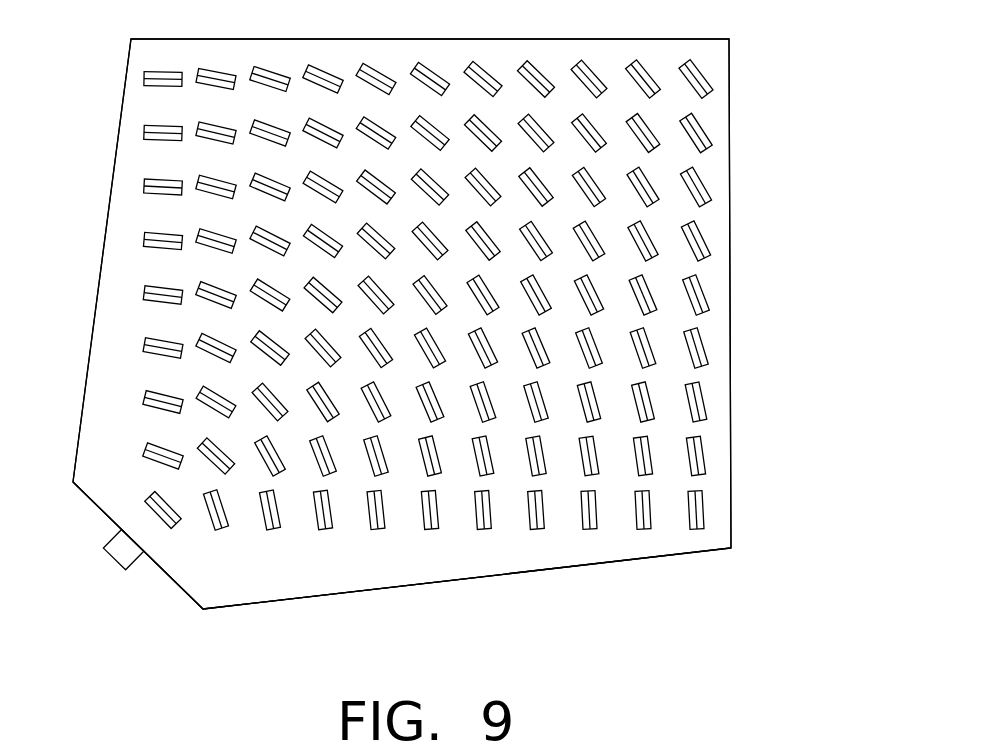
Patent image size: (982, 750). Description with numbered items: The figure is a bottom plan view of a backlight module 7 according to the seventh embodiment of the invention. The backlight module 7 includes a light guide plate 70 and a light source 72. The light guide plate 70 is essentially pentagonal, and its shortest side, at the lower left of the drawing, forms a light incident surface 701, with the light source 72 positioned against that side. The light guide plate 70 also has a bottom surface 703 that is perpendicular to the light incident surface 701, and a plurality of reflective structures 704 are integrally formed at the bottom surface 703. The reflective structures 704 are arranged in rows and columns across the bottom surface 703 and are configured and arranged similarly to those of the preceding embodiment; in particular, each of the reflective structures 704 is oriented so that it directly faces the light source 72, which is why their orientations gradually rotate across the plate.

The backlight module 7 is at (438, 27).
The light guide plate 70 is at (752, 258).
The light incident surface 701 is at (175, 590).
The bottom surface 703 is at (265, 573).
The reflective structures 704 is at (478, 295).
The light source 72 is at (122, 553).